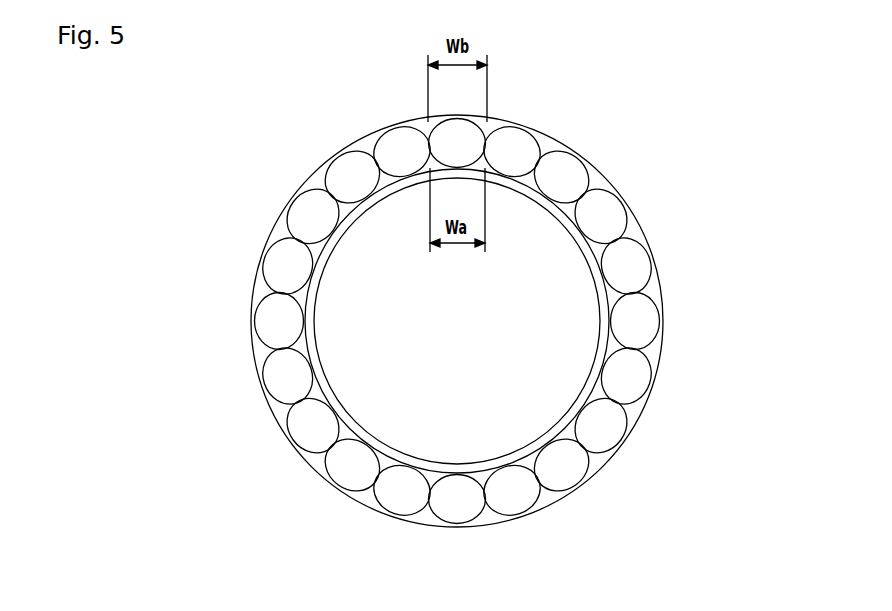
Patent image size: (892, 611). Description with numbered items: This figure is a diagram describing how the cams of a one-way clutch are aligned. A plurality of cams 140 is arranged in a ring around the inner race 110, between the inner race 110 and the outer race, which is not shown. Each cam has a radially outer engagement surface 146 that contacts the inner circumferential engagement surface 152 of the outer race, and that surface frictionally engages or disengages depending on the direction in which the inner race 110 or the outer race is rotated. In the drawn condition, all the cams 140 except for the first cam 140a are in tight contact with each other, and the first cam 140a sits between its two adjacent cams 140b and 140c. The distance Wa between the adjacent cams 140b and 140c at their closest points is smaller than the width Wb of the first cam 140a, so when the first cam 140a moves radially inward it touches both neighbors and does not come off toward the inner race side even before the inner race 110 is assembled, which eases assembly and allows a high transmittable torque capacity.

The inner race 110 is at (333, 402).
The cams 140 is at (406, 282).
The first cam 140a is at (468, 132).
The cam adjacent the first cam 140b is at (527, 145).
The cam adjacent the first cam 140c is at (393, 143).
The radially outer engagement surface 146 is at (660, 323).
The inner circumferential engagement surface 152 is at (653, 362).